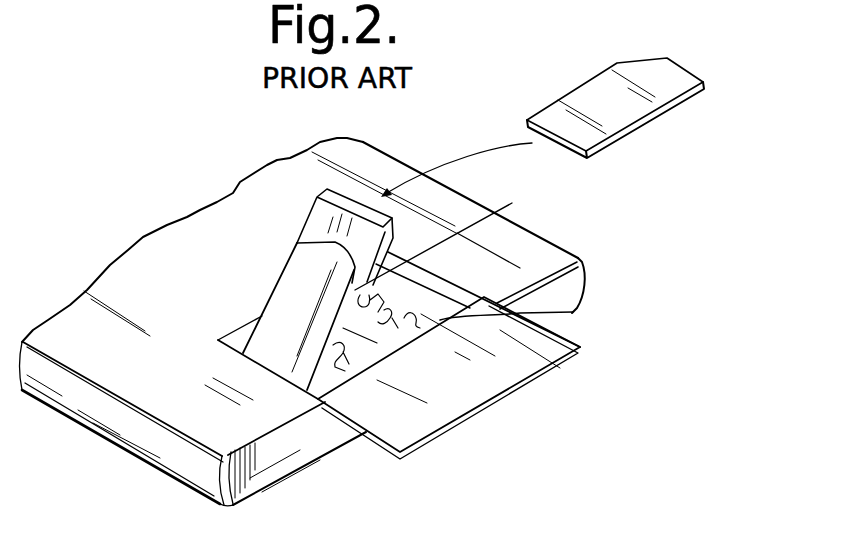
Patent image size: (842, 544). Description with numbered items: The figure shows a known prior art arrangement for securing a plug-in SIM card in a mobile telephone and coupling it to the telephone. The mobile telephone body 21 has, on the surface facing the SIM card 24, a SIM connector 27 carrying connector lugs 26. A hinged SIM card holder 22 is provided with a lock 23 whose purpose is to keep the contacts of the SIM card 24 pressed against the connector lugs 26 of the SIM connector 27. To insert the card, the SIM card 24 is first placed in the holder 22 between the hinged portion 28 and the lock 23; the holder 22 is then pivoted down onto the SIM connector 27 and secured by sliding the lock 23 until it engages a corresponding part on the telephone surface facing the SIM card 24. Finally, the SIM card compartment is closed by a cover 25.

The holder body 21 is at (138, 277).
The hinged SIM card holder 22 is at (273, 262).
The lock 23 is at (312, 222).
The SIM card 24 is at (667, 82).
The cover 25 is at (480, 370).
The connector lugs 26 is at (570, 313).
The SIM connector 27 is at (450, 237).
The hinged portion 28 is at (262, 318).